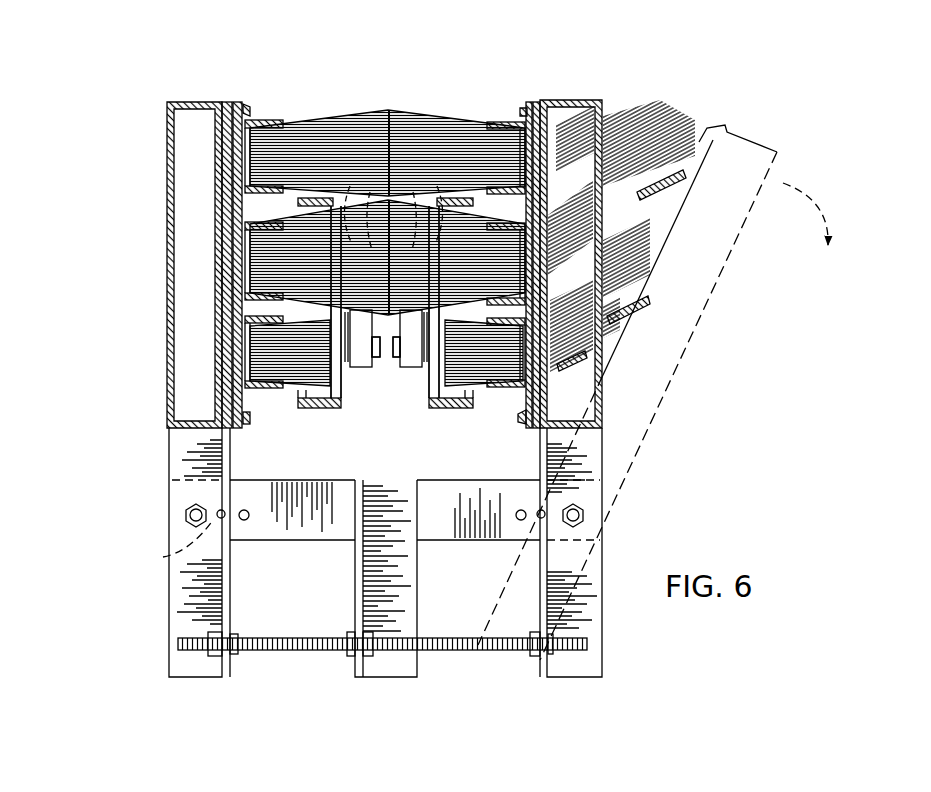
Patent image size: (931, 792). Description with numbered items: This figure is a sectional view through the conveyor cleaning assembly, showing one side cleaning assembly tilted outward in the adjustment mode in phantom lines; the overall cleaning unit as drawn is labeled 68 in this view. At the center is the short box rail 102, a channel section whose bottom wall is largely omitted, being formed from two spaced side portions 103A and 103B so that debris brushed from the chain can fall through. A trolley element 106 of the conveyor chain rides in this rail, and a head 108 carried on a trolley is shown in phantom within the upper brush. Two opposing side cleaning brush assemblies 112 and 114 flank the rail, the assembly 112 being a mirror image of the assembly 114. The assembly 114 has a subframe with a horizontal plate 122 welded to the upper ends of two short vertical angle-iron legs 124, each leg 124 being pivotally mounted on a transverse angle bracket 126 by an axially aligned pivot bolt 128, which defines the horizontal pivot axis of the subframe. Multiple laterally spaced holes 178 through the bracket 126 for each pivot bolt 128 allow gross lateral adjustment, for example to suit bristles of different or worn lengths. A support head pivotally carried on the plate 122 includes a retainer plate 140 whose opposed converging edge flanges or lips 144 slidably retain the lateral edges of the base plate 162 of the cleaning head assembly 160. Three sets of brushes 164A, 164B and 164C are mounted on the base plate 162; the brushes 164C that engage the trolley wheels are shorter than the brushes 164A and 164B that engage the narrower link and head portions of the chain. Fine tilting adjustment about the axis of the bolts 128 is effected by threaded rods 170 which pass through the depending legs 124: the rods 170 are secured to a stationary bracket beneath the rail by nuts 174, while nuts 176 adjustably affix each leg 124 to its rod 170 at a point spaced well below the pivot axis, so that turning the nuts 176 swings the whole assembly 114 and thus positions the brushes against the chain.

The brush cleaning head assembly 68 is at (265, 102).
The box rail 102 is at (430, 421).
The side portion 103A is at (447, 412).
The side portion 103B is at (313, 403).
The trolley element 106 is at (397, 382).
The head 108 is at (432, 135).
The side cleaning brush assembly 112 is at (566, 97).
The side cleaning brush assembly 114 is at (166, 98).
The horizontal plate 122 is at (215, 437).
The vertical angle-iron leg 124 is at (177, 624).
The transverse angle bracket 126 is at (333, 528).
The pivot bolt 128 is at (185, 511).
The retainer plate 140 is at (222, 98).
The edge flange or lip 144 is at (246, 104).
The cleaning head assembly 160 is at (302, 114).
The base plate 162 is at (252, 117).
The brush 164A is at (243, 176).
The brush 164B is at (243, 258).
The brush 164C is at (243, 340).
The threaded rod 170 is at (305, 655).
The nut 174 is at (378, 633).
The nut 176 is at (213, 658).
The hole 178 is at (163, 557).